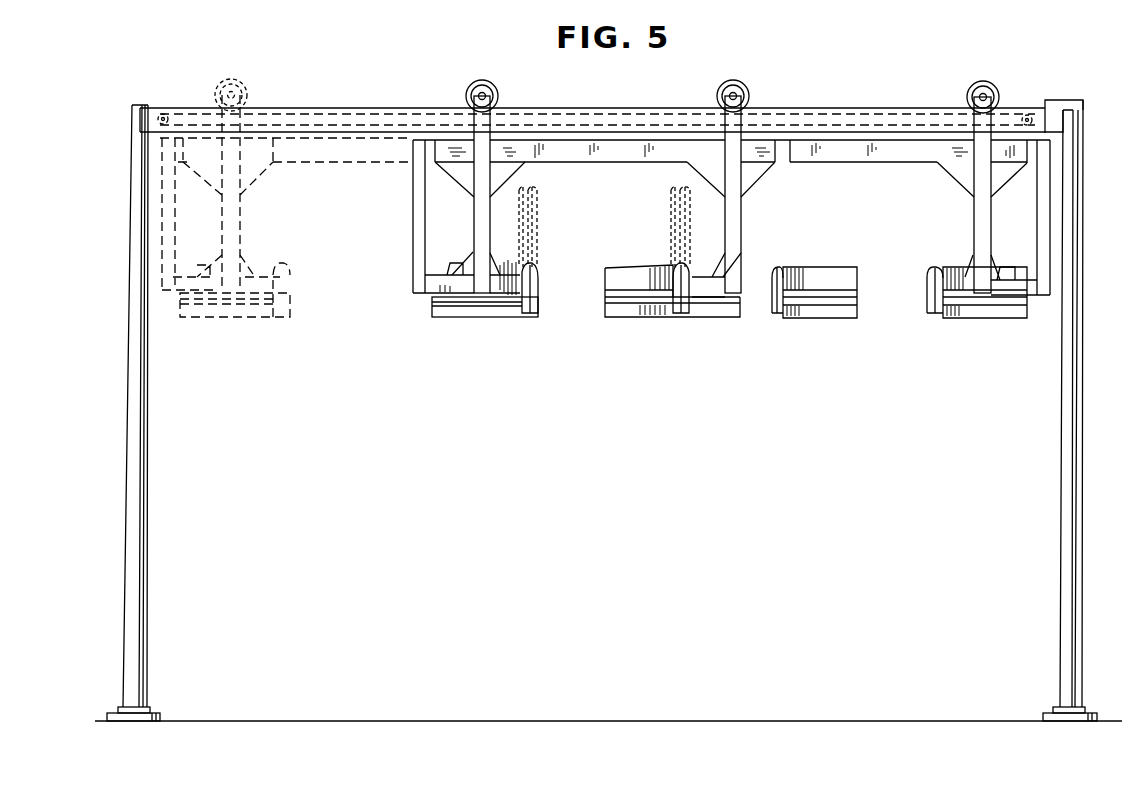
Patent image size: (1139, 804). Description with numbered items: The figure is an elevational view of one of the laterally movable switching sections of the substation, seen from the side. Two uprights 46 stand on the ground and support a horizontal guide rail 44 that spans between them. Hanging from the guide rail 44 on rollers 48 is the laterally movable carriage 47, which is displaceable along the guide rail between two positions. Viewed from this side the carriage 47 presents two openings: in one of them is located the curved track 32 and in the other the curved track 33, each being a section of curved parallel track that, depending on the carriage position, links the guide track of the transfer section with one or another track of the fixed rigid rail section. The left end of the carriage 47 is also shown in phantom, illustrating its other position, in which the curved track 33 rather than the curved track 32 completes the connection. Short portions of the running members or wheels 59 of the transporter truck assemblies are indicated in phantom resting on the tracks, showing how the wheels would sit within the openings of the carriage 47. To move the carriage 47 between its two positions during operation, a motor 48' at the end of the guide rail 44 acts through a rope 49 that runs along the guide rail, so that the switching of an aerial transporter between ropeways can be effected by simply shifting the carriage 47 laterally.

The curved track 32 is at (290, 305).
The curved track 33 is at (853, 293).
The horizontal guide rail 44 is at (366, 108).
The uprights 46 is at (133, 355).
The laterally movable carriage 47 is at (527, 335).
The rollers 48 is at (628, 87).
The motor 48' is at (1082, 103).
The rope 49 is at (850, 112).
The running members or wheels 59 is at (540, 225).